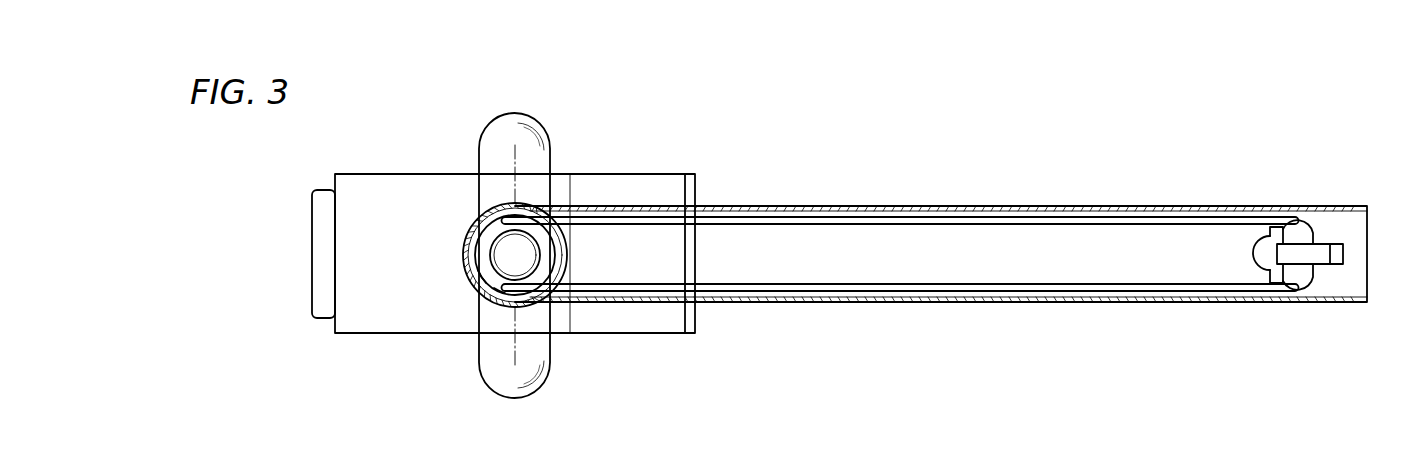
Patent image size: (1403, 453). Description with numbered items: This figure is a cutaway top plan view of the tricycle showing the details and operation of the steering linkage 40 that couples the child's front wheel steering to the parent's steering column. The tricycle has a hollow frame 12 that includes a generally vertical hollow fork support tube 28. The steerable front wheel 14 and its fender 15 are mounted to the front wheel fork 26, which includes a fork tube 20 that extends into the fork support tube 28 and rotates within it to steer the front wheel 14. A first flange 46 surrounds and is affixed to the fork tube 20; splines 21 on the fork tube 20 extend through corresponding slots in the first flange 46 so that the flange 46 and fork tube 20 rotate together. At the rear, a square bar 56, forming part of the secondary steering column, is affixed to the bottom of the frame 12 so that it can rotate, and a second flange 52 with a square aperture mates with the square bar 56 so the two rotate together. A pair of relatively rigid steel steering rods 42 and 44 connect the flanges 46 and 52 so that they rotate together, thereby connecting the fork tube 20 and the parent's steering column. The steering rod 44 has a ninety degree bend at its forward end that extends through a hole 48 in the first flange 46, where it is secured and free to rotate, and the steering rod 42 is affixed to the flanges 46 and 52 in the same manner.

The hollow frame 12 is at (1058, 205).
The steerable front wheel 14 is at (312, 255).
The fender 15 is at (363, 325).
The fork tube 20 is at (493, 240).
The splines 21 is at (487, 256).
The front wheel fork 26 is at (516, 112).
The fork support tube 28 is at (491, 238).
The steering linkage 40 is at (832, 112).
The steering rod 42 is at (940, 217).
The steering rod 44 is at (940, 291).
The first flange 46 is at (493, 278).
The hole 48 is at (513, 280).
The second flange 52 is at (1300, 231).
The square bar 56 is at (1321, 257).